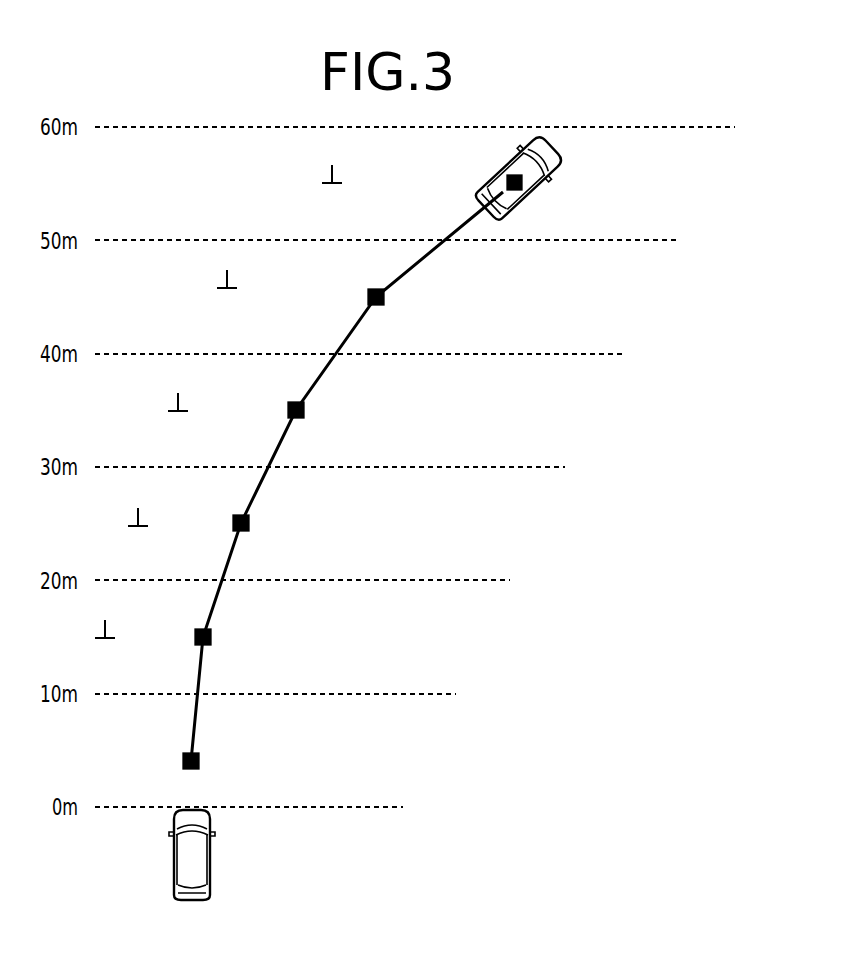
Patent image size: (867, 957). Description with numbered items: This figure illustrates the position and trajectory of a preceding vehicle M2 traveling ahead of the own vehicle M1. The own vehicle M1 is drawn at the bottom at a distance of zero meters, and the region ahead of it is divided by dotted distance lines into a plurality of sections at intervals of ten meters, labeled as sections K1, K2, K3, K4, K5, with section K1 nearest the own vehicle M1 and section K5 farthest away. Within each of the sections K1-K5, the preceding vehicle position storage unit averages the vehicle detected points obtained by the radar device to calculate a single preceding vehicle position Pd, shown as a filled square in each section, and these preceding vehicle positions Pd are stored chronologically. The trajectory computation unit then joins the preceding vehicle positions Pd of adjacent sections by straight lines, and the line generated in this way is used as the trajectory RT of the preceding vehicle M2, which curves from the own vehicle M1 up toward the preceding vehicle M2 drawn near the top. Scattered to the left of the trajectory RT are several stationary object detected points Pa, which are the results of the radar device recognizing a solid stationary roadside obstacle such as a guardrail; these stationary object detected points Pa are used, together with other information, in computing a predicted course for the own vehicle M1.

The own vehicle M1 is at (187, 873).
The preceding vehicle M2 is at (557, 152).
The trajectory RT is at (321, 375).
The preceding vehicle position Pd is at (249, 524).
The stationary object detected points Pa is at (225, 282).
The section K1 is at (249, 772).
The section K2 is at (275, 659).
The section K3 is at (302, 545).
The section K4 is at (330, 431).
The section K5 is at (358, 318).